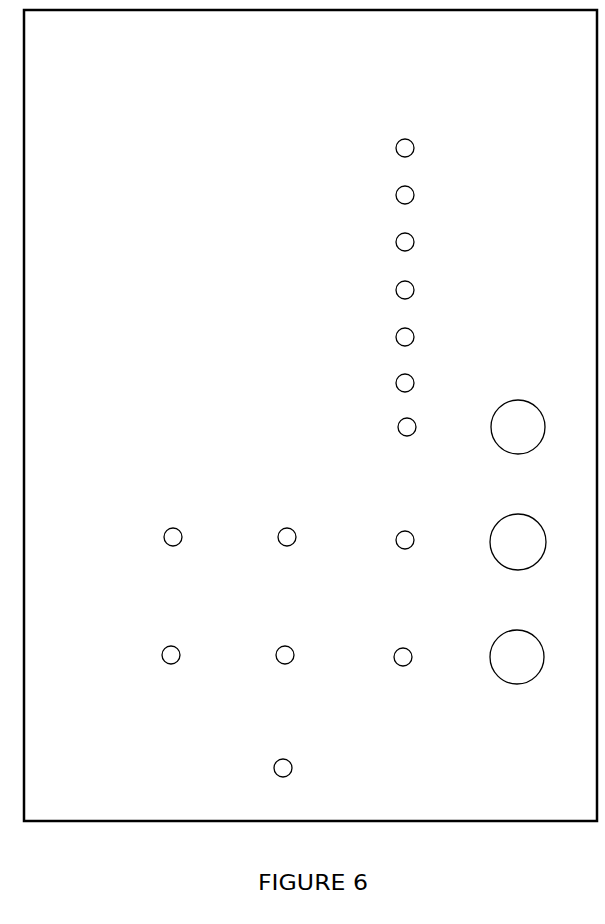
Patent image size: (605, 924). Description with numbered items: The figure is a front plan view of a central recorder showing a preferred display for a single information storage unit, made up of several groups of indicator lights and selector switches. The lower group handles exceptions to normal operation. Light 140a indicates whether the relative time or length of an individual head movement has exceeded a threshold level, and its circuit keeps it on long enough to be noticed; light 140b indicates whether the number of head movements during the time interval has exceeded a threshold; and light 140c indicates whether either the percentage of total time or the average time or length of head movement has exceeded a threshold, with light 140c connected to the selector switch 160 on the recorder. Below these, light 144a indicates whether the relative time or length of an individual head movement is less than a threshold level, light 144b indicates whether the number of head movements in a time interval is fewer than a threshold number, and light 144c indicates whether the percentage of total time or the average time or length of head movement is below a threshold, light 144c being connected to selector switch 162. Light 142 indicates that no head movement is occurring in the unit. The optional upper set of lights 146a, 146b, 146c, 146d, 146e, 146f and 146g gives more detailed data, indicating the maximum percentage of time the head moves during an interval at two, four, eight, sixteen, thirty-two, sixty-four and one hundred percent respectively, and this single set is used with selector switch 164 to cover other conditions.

The light 146g is at (414, 149).
The light 146f is at (414, 196).
The light 146e is at (414, 243).
The light 146d is at (414, 291).
The light 146c is at (414, 338).
The light 146b is at (414, 384).
The light 146a is at (415, 432).
The selector switch 164 is at (545, 428).
The selector switch 160 is at (546, 543).
The selector switch 162 is at (545, 658).
The light 140a is at (181, 542).
The light 140b is at (295, 542).
The light 140c is at (414, 544).
The light 144a is at (180, 660).
The light 144b is at (294, 659).
The light 144c is at (412, 660).
The light 142 is at (292, 769).